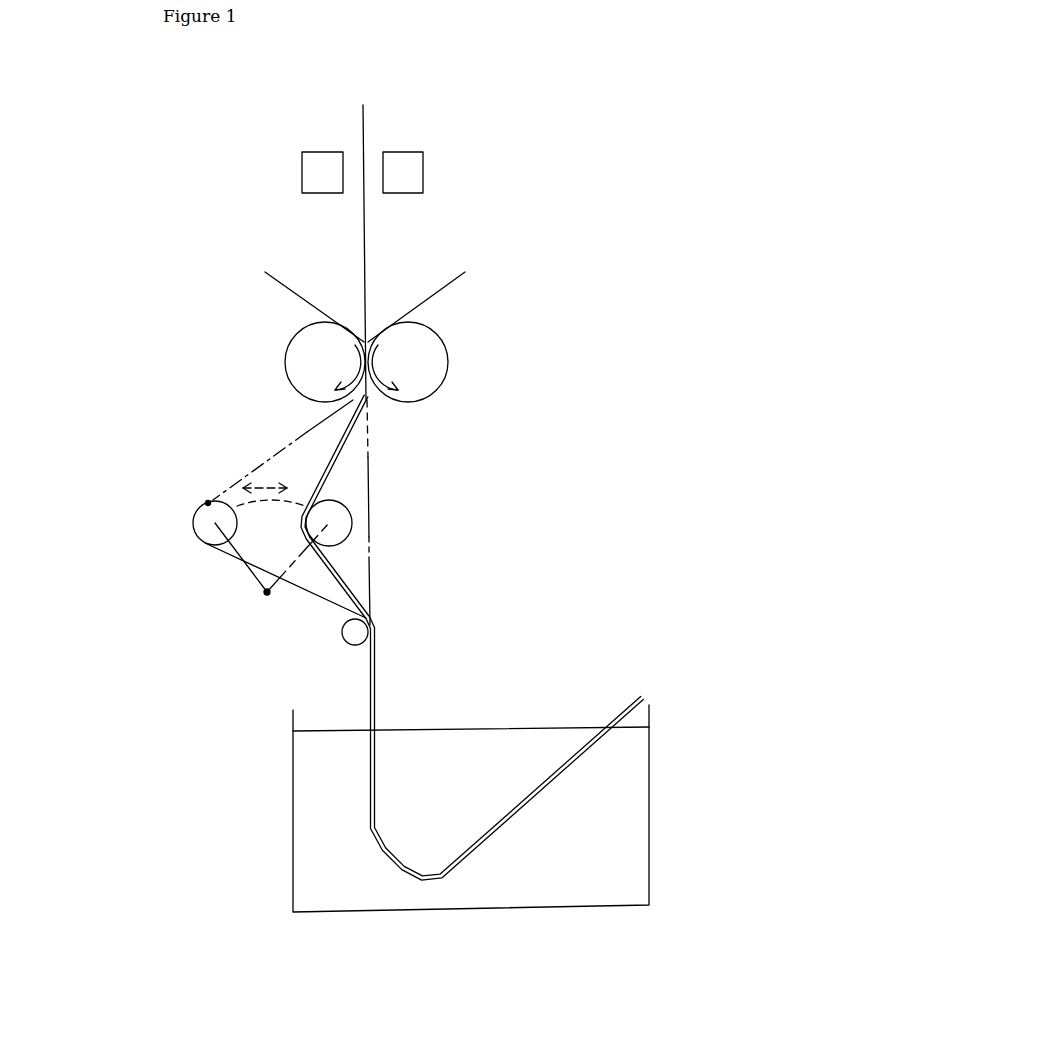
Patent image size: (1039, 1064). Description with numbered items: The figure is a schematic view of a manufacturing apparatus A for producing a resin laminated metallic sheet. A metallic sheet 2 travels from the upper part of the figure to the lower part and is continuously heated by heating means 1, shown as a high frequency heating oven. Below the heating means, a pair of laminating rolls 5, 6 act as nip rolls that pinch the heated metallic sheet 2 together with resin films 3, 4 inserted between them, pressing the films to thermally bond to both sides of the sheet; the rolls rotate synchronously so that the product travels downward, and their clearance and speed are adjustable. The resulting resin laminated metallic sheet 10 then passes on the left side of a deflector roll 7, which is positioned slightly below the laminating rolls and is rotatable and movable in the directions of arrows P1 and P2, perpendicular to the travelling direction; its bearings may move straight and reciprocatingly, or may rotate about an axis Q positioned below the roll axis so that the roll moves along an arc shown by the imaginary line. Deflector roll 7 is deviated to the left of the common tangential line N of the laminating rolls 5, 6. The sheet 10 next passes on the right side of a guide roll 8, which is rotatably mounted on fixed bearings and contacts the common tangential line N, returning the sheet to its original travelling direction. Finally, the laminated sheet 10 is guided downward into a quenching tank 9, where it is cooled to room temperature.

The heating means 1 is at (302, 170).
The metallic sheet 2 is at (362, 257).
The resin film 3 is at (290, 288).
The resin film 4 is at (440, 290).
The laminating roll 5 is at (315, 356).
The laminating roll 6 is at (430, 360).
The deflector roll 7 is at (347, 517).
The guide roll 8 is at (372, 622).
The quenching tank 9 is at (618, 838).
The resin laminated metallic sheet 10 is at (345, 433).
The manufacturing apparatus A is at (500, 198).
The arrow P1 is at (240, 474).
The arrow P2 is at (273, 474).
The common tangential line N is at (373, 563).
The axis Q is at (267, 592).